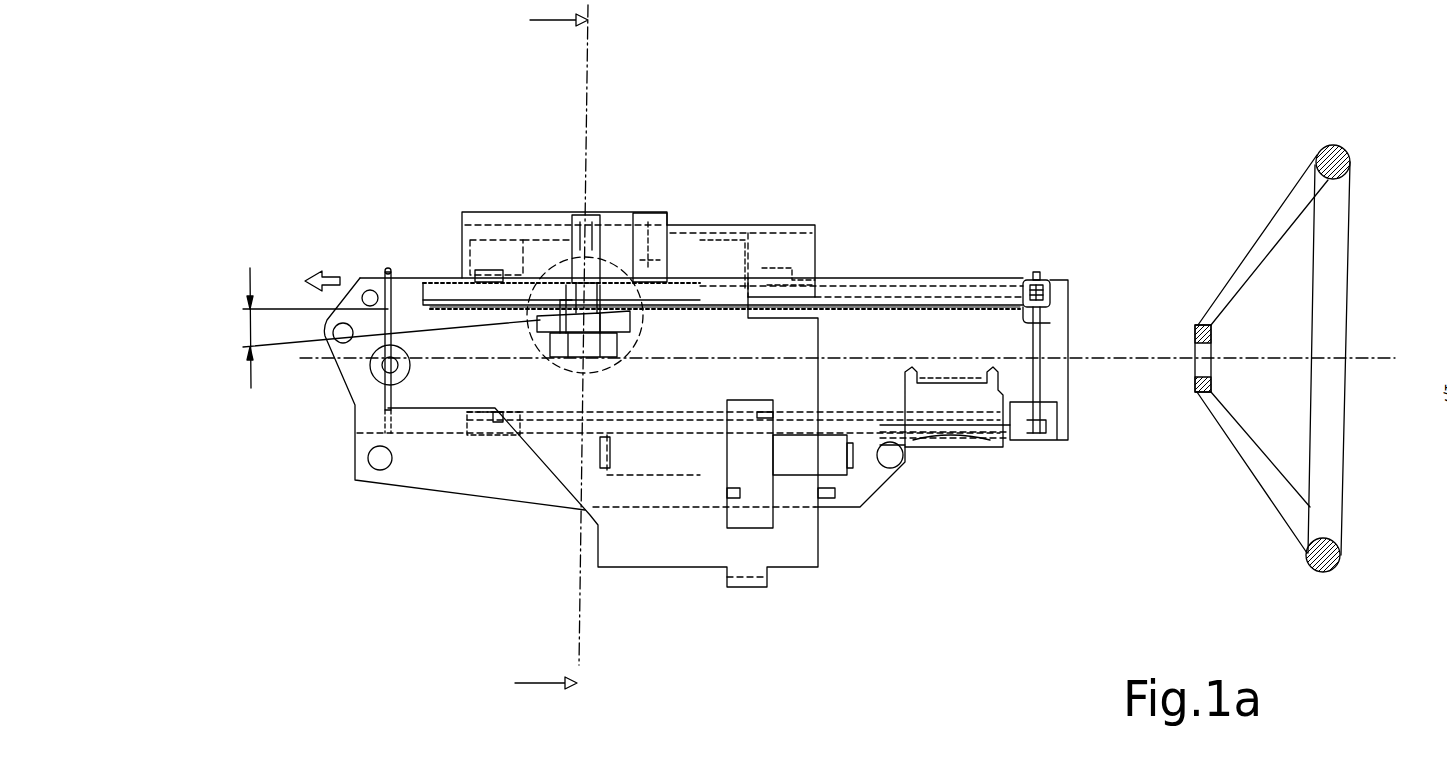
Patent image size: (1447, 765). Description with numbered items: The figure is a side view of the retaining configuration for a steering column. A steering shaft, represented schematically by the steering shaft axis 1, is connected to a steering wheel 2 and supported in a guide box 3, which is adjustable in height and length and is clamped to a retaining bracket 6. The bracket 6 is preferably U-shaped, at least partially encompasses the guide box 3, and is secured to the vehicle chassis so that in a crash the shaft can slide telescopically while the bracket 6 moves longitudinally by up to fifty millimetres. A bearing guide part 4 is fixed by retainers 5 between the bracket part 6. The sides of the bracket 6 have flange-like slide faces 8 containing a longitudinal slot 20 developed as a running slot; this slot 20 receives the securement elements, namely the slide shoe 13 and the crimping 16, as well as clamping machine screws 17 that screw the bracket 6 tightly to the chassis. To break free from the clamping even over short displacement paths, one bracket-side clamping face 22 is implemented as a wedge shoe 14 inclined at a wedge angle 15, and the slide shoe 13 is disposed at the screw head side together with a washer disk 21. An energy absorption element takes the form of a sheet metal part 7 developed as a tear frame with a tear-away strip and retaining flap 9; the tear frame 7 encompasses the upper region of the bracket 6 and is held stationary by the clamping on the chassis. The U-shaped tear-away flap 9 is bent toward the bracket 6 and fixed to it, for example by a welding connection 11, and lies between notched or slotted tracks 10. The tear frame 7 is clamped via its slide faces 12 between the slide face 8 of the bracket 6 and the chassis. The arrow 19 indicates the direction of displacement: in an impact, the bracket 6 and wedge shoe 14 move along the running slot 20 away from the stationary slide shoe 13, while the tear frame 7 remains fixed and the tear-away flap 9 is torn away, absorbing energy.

The steering shaft axis 1 is at (1370, 360).
The steering wheel 2 is at (1332, 428).
The guide box 3 is at (1058, 272).
The bearing guide part 4 is at (1053, 375).
The retainers 5 is at (1045, 282).
The retaining bracket 6 is at (793, 531).
The sheet metal part 7 is at (503, 220).
The slide faces 8 is at (782, 248).
The tear-away flap 9 is at (638, 245).
The notched or slotted tracks 10 is at (462, 212).
The welding connection 11 is at (672, 282).
The slide faces 12 is at (727, 290).
The slide shoe 13 is at (550, 333).
The wedge shoe 14 is at (545, 316).
The wedge angle 15 is at (248, 330).
The crimping 16 is at (567, 296).
The clamping machine screws 17 is at (578, 245).
The direction arrow 19 is at (322, 277).
The longitudinal slot 20 is at (980, 284).
The washer disk 21 is at (620, 333).
The clamping face 22 is at (595, 333).